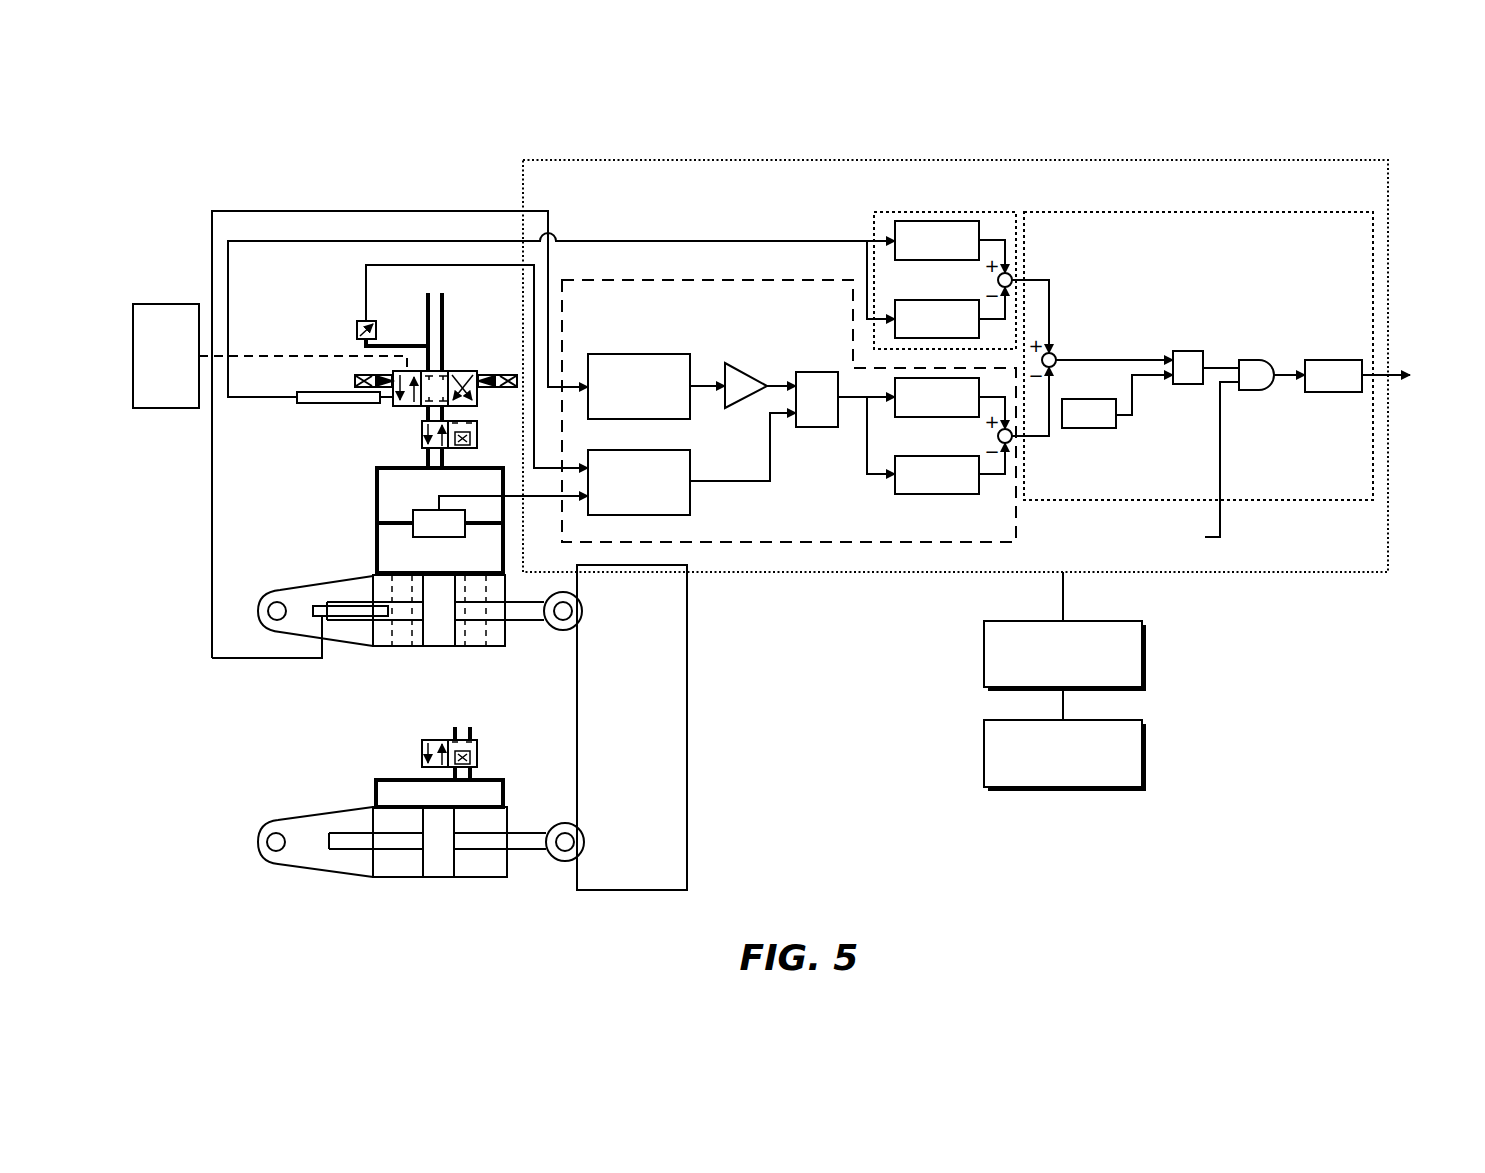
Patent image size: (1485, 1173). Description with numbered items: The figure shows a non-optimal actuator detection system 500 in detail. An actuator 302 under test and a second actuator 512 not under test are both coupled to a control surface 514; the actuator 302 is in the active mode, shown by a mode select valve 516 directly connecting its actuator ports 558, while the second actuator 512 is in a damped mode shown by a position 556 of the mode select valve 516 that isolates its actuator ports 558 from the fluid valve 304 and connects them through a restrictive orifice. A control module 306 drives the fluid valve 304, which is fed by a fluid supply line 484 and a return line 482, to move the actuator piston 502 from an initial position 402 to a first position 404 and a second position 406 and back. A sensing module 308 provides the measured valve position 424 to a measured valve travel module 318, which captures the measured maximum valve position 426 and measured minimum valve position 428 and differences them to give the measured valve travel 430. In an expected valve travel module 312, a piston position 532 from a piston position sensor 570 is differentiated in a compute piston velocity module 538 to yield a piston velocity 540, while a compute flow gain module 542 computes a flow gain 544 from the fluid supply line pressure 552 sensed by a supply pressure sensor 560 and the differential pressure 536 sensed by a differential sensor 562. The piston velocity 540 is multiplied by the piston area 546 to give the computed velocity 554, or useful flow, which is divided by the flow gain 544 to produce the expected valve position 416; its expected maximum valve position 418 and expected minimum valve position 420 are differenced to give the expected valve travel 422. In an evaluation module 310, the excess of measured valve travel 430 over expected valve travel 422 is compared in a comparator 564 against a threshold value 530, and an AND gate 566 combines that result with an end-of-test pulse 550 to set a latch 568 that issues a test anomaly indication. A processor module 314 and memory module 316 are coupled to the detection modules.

The system 500 is at (1356, 121).
The actuator 302 is at (295, 585).
The fluid valve 304 is at (455, 371).
The control module 306 is at (165, 304).
The sensing module 308 is at (295, 403).
The evaluation module 310 is at (1318, 212).
The expected valve travel module 312 is at (823, 543).
The processor module 314 is at (984, 640).
The memory module 316 is at (984, 740).
The measured valve travel module 318 is at (1000, 212).
The initial position 402 is at (447, 651).
The first position 404 is at (478, 575).
The second position 406 is at (400, 647).
The expected valve position 416 is at (875, 476).
The expected maximum valve position 418 is at (950, 403).
The expected minimum valve position 420 is at (950, 468).
The expected valve travel 422 is at (1040, 436).
The measured valve position 424 is at (268, 241).
The measured maximum valve position 426 is at (950, 247).
The measured minimum valve position 428 is at (950, 312).
The measured valve travel 430 is at (1049, 280).
The return line 482 is at (445, 295).
The fluid supply line 484 is at (427, 295).
The actuator piston 502 is at (436, 640).
The second actuator 512 is at (290, 820).
The control surface 514 is at (632, 727).
The mode select valve 516 is at (422, 437).
The threshold value 530 is at (1095, 428).
The piston position 532 is at (405, 211).
The differential pressure 536 is at (572, 497).
The compute piston velocity module 538 is at (639, 386).
The piston velocity 540 is at (705, 385).
The compute flow gain module 542 is at (639, 482).
The flow gain 544 is at (750, 481).
The area 546 is at (738, 368).
The end-of-test pulse 550 is at (1222, 525).
The fluid supply line pressure 552 is at (365, 300).
The computed velocity 554 is at (790, 383).
The position 556 is at (478, 755).
The actuator ports 558 is at (377, 516).
The supply pressure sensor 560 is at (357, 330).
The differential sensor 562 is at (413, 527).
The comparator 564 is at (1185, 351).
The AND gate 566 is at (1248, 360).
The latch 568 is at (1318, 360).
The piston position sensor 570 is at (323, 617).